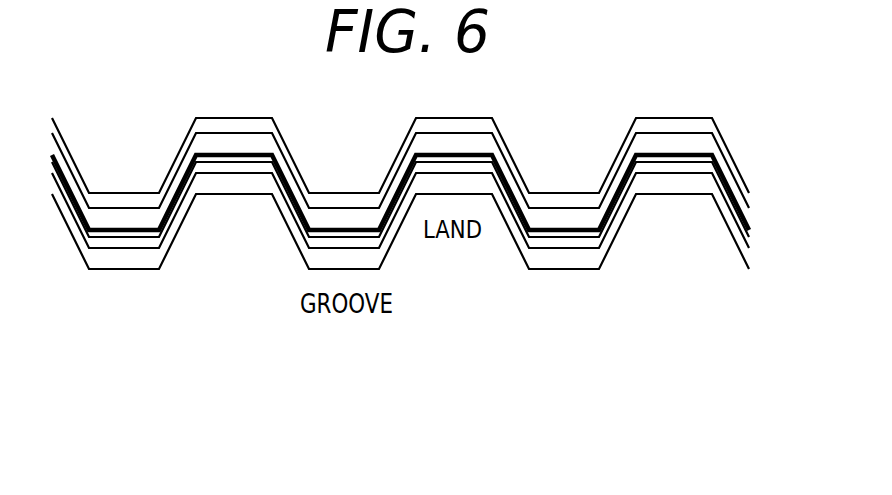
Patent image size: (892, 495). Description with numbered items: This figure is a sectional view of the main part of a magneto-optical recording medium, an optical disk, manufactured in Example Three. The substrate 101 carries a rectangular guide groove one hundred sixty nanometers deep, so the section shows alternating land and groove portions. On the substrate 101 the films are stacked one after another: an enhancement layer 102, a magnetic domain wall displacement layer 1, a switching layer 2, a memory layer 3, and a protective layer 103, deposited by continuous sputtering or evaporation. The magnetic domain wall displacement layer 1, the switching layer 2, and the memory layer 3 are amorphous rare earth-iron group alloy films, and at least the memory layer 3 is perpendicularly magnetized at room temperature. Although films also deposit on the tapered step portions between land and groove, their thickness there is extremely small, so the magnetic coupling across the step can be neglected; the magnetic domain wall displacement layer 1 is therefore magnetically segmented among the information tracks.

The substrate 101 is at (683, 236).
The enhancement layer 102 is at (728, 196).
The magnetic domain wall displacement layer 1 is at (716, 167).
The switching layer 2 is at (704, 154).
The memory layer 3 is at (712, 141).
The protective layer 103 is at (712, 123).